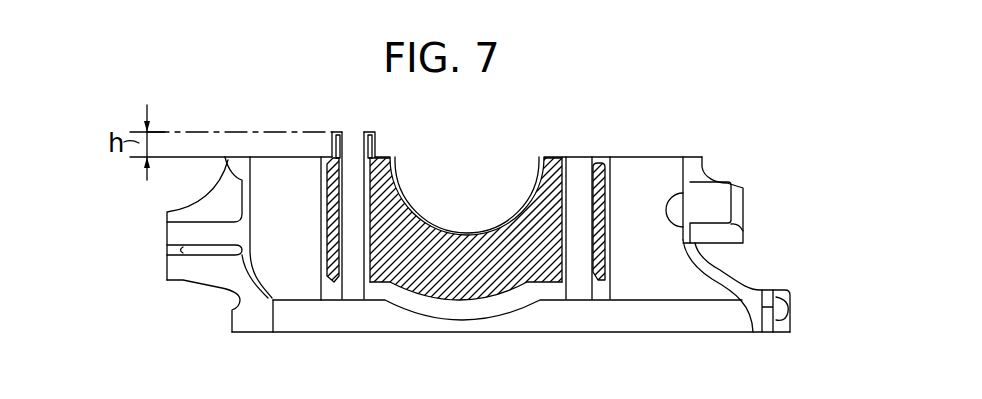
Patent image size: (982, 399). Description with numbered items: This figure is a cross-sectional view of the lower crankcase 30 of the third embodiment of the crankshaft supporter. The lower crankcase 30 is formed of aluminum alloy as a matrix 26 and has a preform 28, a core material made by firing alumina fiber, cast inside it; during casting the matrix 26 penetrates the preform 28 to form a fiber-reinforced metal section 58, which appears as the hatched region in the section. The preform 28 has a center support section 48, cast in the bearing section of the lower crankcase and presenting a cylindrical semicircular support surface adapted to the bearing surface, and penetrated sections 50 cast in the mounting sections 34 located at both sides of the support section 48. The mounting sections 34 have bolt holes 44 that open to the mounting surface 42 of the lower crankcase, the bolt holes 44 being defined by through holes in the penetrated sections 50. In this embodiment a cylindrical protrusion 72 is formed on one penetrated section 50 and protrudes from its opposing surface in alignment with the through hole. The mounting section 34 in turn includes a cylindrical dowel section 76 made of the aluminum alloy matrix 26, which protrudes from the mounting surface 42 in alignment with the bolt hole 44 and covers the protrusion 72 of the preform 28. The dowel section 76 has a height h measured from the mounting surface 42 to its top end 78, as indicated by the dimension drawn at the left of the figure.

The matrix 26 is at (472, 312).
The preform 28 is at (485, 264).
The lower crankcase 30 is at (761, 236).
The mounting section 34 is at (322, 226).
The mounting surface 42 is at (604, 156).
The bolt hole 44 is at (343, 262).
The center support section 48 is at (450, 257).
The penetrated section 50 is at (346, 221).
The fiber-reinforced metal section 58 is at (424, 304).
The cylindrical protrusion 72 is at (373, 148).
The cylindrical dowel section 76 is at (377, 123).
The top end 78 is at (332, 131).